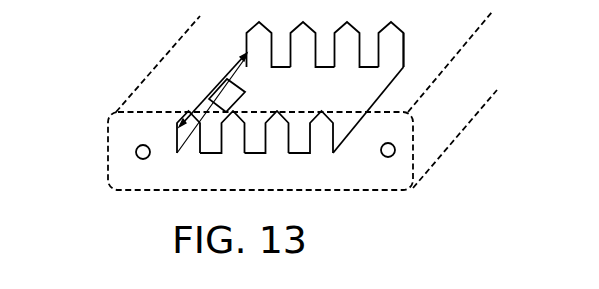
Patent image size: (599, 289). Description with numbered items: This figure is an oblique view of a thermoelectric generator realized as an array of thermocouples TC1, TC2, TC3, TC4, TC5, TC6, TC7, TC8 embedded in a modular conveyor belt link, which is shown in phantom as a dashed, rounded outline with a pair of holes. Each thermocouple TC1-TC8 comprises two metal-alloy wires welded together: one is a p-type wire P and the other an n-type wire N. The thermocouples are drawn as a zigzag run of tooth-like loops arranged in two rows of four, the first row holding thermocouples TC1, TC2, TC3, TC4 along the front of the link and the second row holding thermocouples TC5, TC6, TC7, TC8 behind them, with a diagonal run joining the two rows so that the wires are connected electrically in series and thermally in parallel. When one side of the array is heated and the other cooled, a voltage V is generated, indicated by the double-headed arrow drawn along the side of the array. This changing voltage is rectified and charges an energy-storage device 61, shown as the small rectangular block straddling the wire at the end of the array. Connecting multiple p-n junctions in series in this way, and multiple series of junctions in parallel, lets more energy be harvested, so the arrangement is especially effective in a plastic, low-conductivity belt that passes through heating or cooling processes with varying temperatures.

The thermocouple TC1 is at (189, 145).
The thermocouple TC2 is at (224, 145).
The thermocouple TC3 is at (269, 145).
The thermocouple TC4 is at (312, 145).
The thermocouple TC5 is at (390, 34).
The thermocouple TC6 is at (355, 34).
The thermocouple TC7 is at (311, 34).
The thermocouple TC8 is at (267, 34).
The voltage V is at (228, 73).
The energy-storage device 61 is at (245, 92).
The p-type wire P is at (380, 52).
The n-type wire N is at (404, 49).